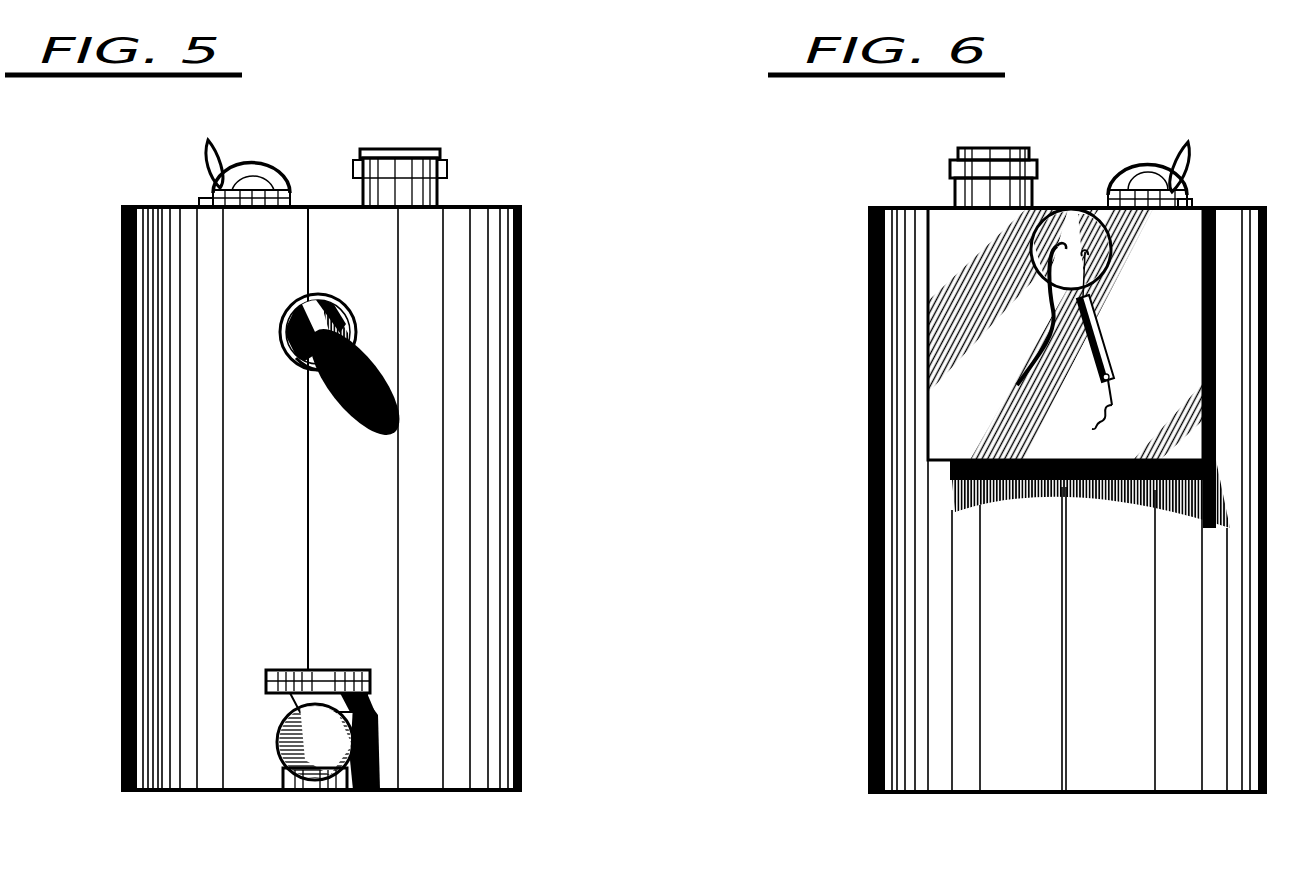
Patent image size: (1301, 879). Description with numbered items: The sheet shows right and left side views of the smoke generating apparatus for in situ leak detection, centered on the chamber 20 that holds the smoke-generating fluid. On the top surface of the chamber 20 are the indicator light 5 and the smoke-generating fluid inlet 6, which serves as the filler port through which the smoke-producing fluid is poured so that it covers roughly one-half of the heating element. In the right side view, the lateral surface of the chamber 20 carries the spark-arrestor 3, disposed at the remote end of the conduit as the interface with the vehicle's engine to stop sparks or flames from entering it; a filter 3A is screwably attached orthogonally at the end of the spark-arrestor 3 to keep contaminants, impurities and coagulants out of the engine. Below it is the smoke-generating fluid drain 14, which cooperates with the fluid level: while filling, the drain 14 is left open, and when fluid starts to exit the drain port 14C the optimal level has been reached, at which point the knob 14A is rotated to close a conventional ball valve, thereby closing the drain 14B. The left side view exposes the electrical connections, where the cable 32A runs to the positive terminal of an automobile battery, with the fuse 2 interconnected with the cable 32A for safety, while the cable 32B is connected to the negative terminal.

In FIG. 5, the chamber 20 is at (521, 383).
In FIG. 6, the chamber 20 is at (866, 453).
In FIG. 5, the indicator light 5 is at (262, 172).
In FIG. 6, the indicator light 5 is at (1124, 173).
In FIG. 5, the smoke-generating fluid inlet 6 is at (425, 149).
In FIG. 6, the smoke-generating fluid inlet 6 is at (975, 148).
In FIG. 5, the spark-arrestor 3 is at (327, 296).
In FIG. 5, the filter 3A is at (303, 368).
In FIG. 5, the smoke-generating fluid drain 14 is at (275, 757).
In FIG. 5, the knob 14A is at (313, 671).
In FIG. 5, the drain 14B is at (367, 790).
In FIG. 5, the drain port 14C is at (315, 790).
In FIG. 6, the fuse 2 is at (1107, 343).
In FIG. 6, the cable 32A is at (1077, 419).
In FIG. 6, the cable 32B is at (1019, 314).